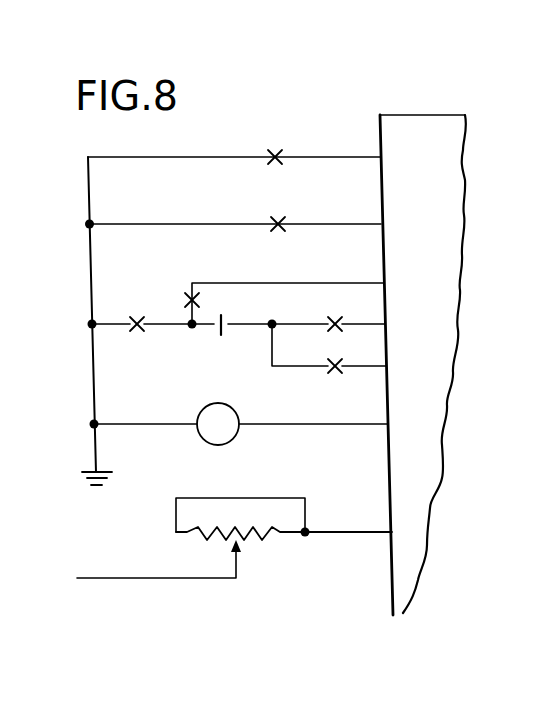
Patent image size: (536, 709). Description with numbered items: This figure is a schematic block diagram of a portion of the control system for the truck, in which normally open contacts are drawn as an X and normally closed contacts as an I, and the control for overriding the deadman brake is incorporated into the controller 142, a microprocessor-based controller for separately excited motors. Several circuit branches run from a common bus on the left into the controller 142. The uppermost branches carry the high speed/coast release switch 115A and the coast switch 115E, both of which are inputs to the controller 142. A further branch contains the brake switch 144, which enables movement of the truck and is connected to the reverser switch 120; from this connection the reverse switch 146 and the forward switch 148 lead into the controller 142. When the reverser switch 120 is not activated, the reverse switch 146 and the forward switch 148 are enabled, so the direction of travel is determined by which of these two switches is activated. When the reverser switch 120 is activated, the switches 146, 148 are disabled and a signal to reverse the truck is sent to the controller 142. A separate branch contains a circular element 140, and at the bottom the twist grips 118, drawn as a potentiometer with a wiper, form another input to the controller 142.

The high speed/coast release switch 115A is at (277, 150).
The coast switch 115E is at (279, 216).
The controller 142 is at (420, 135).
The brake switch 144 is at (136, 316).
The reverser switch 120 is at (212, 300).
The reverse switch 146 is at (335, 317).
The forward switch 148 is at (334, 374).
The indicator lamp 140 is at (226, 444).
The twist grips 118 is at (260, 551).